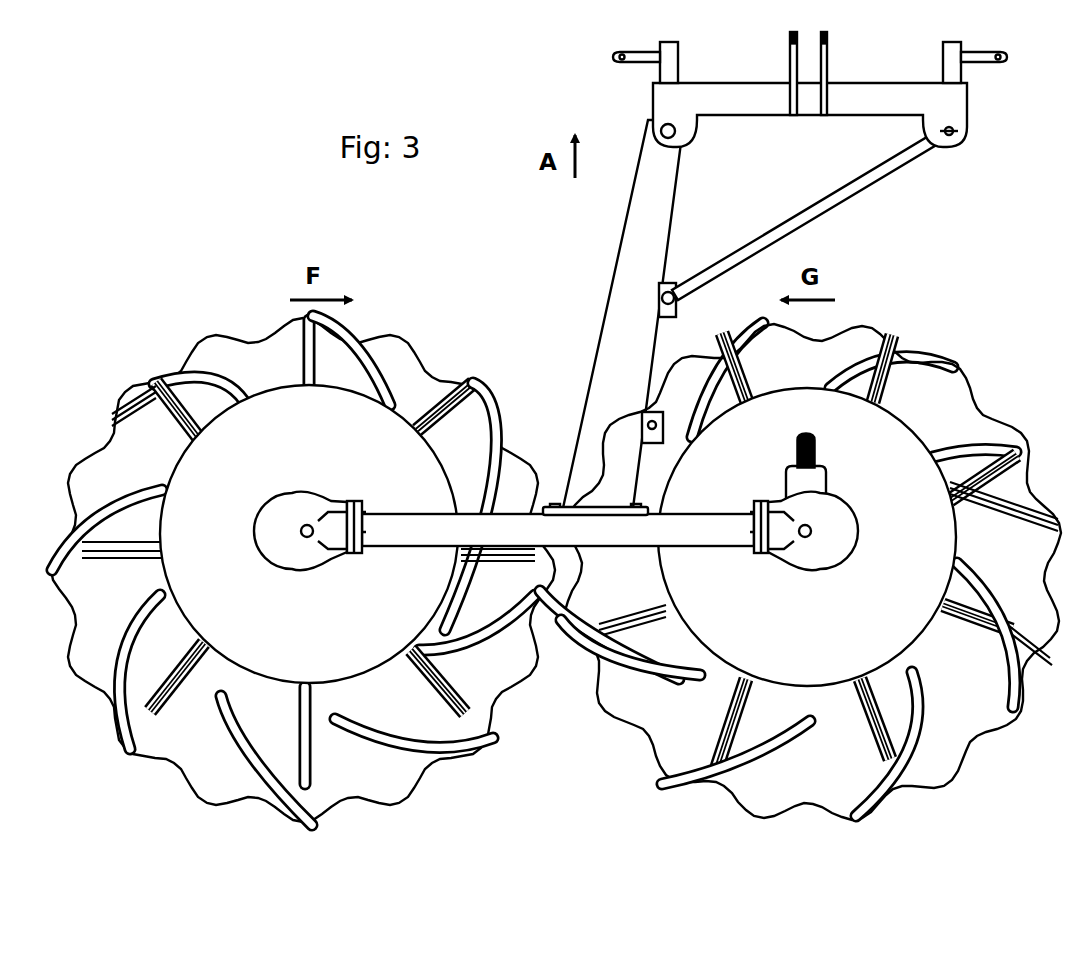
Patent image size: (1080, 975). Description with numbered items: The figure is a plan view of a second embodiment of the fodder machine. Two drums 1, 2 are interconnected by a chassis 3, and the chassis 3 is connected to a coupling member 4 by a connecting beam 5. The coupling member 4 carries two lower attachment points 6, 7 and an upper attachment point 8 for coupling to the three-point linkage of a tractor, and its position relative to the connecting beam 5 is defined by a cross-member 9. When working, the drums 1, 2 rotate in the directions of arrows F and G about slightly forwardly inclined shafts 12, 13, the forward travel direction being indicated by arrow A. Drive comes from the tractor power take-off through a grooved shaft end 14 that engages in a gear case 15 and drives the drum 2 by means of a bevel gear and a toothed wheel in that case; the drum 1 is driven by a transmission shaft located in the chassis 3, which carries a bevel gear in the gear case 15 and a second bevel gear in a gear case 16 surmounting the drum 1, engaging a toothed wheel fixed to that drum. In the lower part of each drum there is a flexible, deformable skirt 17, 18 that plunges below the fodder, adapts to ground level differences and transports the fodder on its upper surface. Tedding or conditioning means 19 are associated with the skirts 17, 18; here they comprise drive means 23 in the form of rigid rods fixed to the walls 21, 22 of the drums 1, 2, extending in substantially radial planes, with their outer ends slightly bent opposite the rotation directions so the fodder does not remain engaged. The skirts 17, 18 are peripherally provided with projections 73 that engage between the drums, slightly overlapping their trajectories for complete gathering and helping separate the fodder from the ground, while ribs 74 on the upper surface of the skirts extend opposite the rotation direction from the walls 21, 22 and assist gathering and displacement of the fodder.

The drum 1 is at (220, 370).
The drum 2 is at (928, 396).
The chassis 3 is at (526, 525).
The coupling member 4 is at (780, 104).
The connecting beam 5 is at (640, 262).
The lower attachment point 6 is at (632, 57).
The lower attachment point 7 is at (985, 60).
The upper attachment point 8 is at (827, 46).
The cross-member 9 is at (820, 208).
The shaft 12 is at (302, 527).
The shaft 13 is at (812, 524).
The grooved shaft end 14 is at (817, 452).
The gear case 15 is at (810, 556).
The gear case 16 is at (311, 557).
The flexible, deformable skirt 17 is at (143, 668).
The flexible, deformable skirt 18 is at (943, 727).
The tedding or conditioning means 19 is at (176, 700).
The wall 21 is at (385, 682).
The wall 22 is at (910, 660).
The drive means 23 is at (120, 412).
The projections 73 is at (495, 735).
The ribs 74 is at (378, 365).